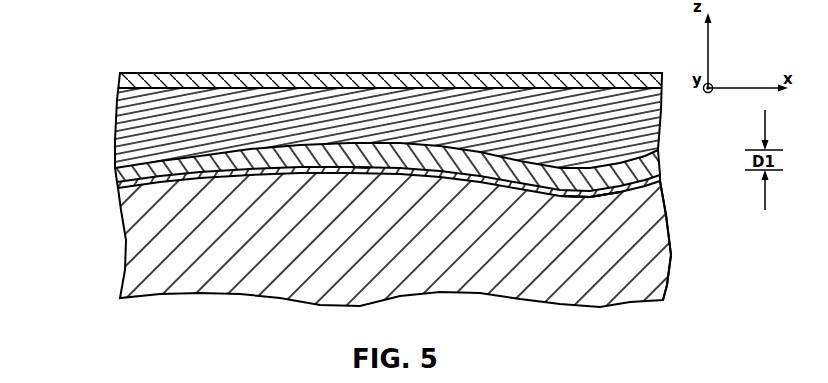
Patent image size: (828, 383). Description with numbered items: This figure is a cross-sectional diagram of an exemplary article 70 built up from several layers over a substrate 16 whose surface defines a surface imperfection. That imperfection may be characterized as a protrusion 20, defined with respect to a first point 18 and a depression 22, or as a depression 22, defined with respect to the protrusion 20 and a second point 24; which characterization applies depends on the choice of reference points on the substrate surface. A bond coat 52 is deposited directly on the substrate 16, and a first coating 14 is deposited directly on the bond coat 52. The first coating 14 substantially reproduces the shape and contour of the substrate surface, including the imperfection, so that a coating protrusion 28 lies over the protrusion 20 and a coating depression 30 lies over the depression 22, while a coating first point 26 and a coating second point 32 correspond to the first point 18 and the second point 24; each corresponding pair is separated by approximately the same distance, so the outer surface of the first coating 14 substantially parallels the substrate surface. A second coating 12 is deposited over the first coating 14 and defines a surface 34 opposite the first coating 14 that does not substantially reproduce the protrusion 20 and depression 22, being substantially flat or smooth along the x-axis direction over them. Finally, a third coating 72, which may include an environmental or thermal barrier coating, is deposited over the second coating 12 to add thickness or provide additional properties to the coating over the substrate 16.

The article 70 is at (92, 45).
The third coating 72 is at (119, 78).
The surface 34 is at (188, 73).
The second coating 12 is at (119, 118).
The coating first point 26 is at (115, 167).
The coating second point 32 is at (658, 152).
The first coating 14 is at (120, 188).
The bond coat 52 is at (660, 175).
The first point 18 is at (121, 193).
The substrate 16 is at (135, 239).
The coating protrusion 28 is at (333, 170).
The protrusion 20 is at (333, 170).
The coating depression 30 is at (591, 196).
The depression 22 is at (589, 197).
The second point 24 is at (659, 178).